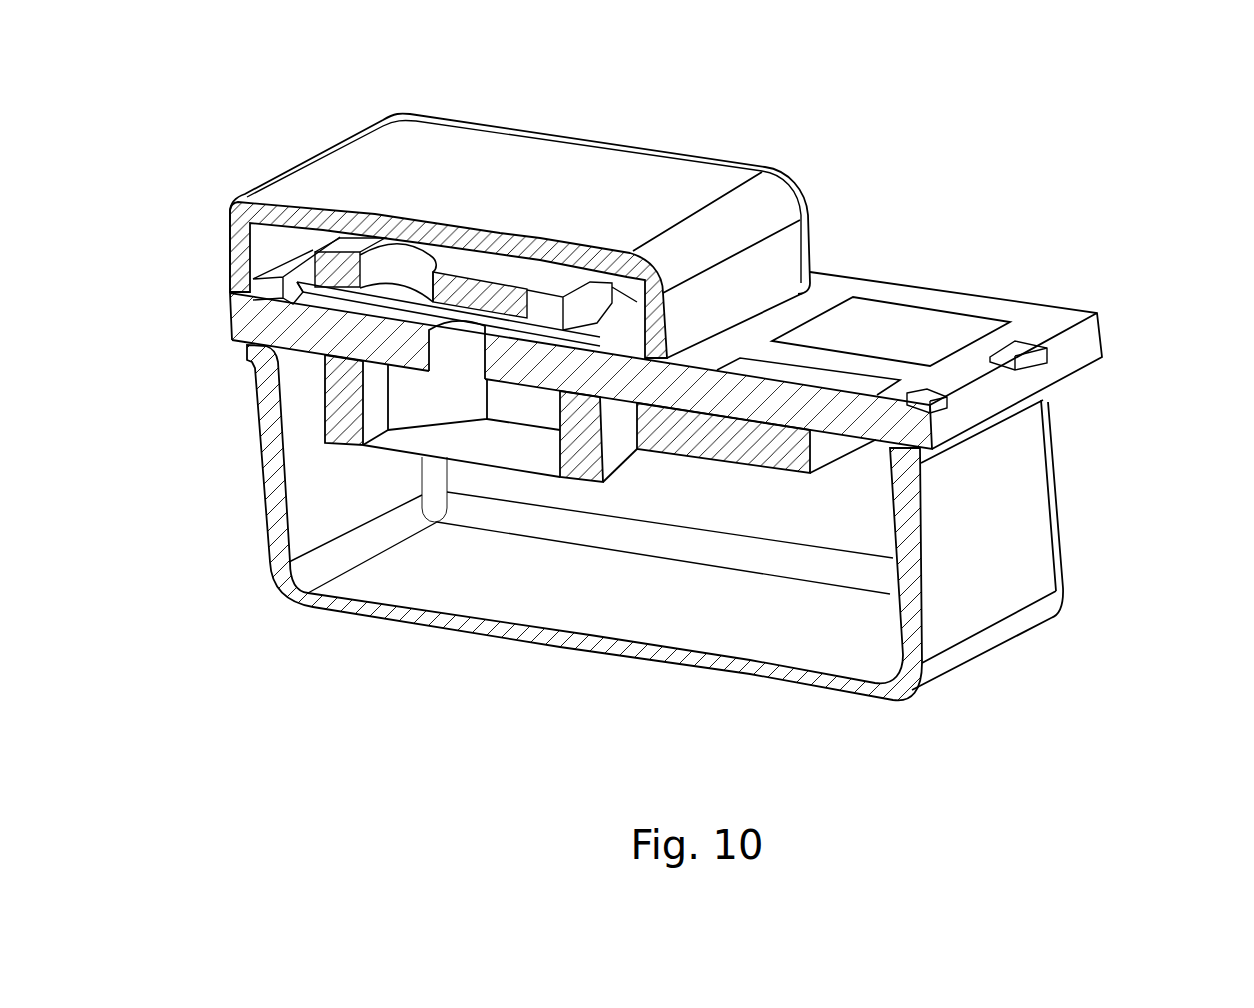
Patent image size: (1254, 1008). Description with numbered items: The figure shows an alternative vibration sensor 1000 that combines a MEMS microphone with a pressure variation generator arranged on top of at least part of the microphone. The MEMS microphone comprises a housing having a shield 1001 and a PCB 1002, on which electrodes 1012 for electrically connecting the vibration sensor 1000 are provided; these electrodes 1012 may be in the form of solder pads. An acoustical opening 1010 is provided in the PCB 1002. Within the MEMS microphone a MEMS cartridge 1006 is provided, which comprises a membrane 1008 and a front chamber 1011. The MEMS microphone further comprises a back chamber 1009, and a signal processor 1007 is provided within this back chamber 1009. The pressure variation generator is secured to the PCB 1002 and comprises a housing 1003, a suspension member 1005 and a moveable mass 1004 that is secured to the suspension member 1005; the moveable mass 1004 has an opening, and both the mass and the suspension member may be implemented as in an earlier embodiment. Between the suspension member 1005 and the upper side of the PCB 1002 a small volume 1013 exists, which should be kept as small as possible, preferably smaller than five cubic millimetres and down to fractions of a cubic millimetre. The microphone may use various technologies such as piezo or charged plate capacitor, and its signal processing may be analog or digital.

The vibration sensor 1000 is at (1056, 229).
The shield 1001 is at (1018, 502).
The PCB 1002 is at (1086, 343).
The housing 1003 is at (700, 192).
The moveable mass 1004 is at (498, 292).
The suspension member 1005 is at (400, 303).
The MEMS cartridge 1006 is at (332, 394).
The signal processor 1007 is at (720, 433).
The membrane 1008 is at (474, 442).
The back chamber 1009 is at (845, 638).
The acoustical opening 1010 is at (452, 350).
The front chamber 1011 is at (542, 420).
The electrodes 1012 is at (369, 272).
The small volume 1013 is at (527, 335).